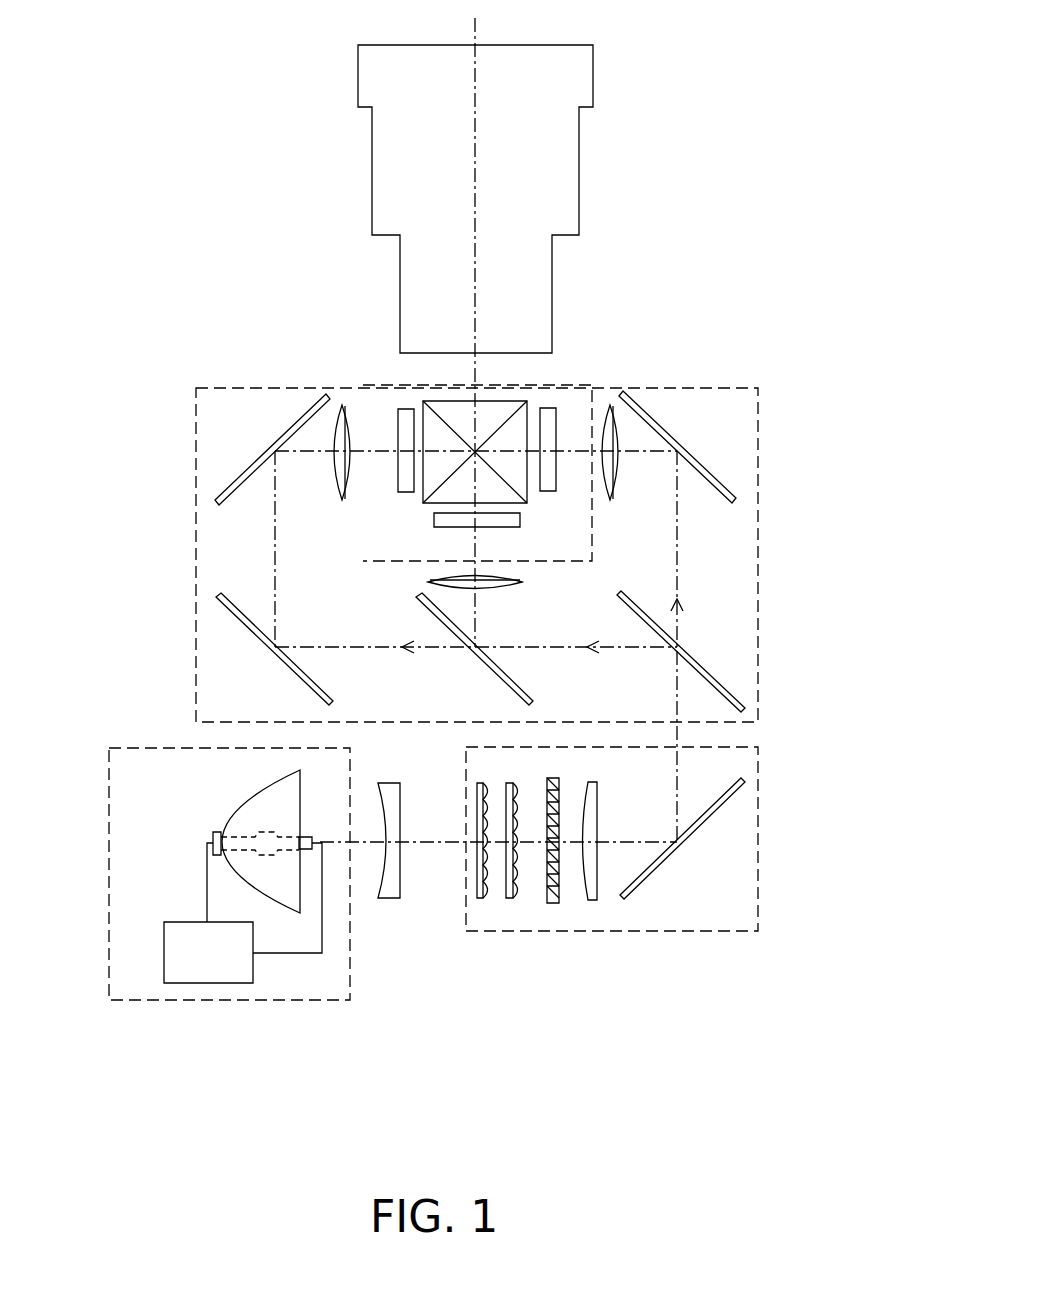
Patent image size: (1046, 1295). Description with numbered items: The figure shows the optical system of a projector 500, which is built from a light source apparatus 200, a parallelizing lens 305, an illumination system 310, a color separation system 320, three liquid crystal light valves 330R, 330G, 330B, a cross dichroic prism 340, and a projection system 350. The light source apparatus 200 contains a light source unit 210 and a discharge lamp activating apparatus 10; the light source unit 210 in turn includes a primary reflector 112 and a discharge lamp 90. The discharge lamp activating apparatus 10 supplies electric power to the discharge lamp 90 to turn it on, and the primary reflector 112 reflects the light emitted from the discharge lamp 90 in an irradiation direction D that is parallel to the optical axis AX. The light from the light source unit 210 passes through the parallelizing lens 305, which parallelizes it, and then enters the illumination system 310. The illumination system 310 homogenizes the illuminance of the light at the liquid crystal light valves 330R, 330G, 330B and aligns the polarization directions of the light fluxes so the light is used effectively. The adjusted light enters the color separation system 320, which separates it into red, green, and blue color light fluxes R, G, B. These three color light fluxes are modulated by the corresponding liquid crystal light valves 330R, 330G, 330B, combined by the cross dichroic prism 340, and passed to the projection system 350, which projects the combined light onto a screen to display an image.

The projector 500 is at (672, 26).
The projection system 350 is at (579, 200).
The cross dichroic prism 340 is at (456, 401).
The liquid crystal light valve 330R is at (548, 408).
The liquid crystal light valve 330G is at (520, 520).
The liquid crystal light valve 330B is at (407, 492).
The color separation system 320 is at (758, 688).
The illumination system 310 is at (760, 888).
The parallelizing lens 305 is at (393, 898).
The light source apparatus 200 is at (190, 1002).
The light source unit 210 is at (227, 836).
The primary reflector 112 is at (234, 803).
The discharge lamp 90 is at (302, 834).
The discharge lamp activating apparatus 10 is at (164, 958).
The optical axis AX is at (440, 845).
The blue color light flux B is at (275, 578).
The red color light flux R is at (677, 567).
The green color light flux G is at (475, 594).
The irradiation direction D is at (325, 1022).